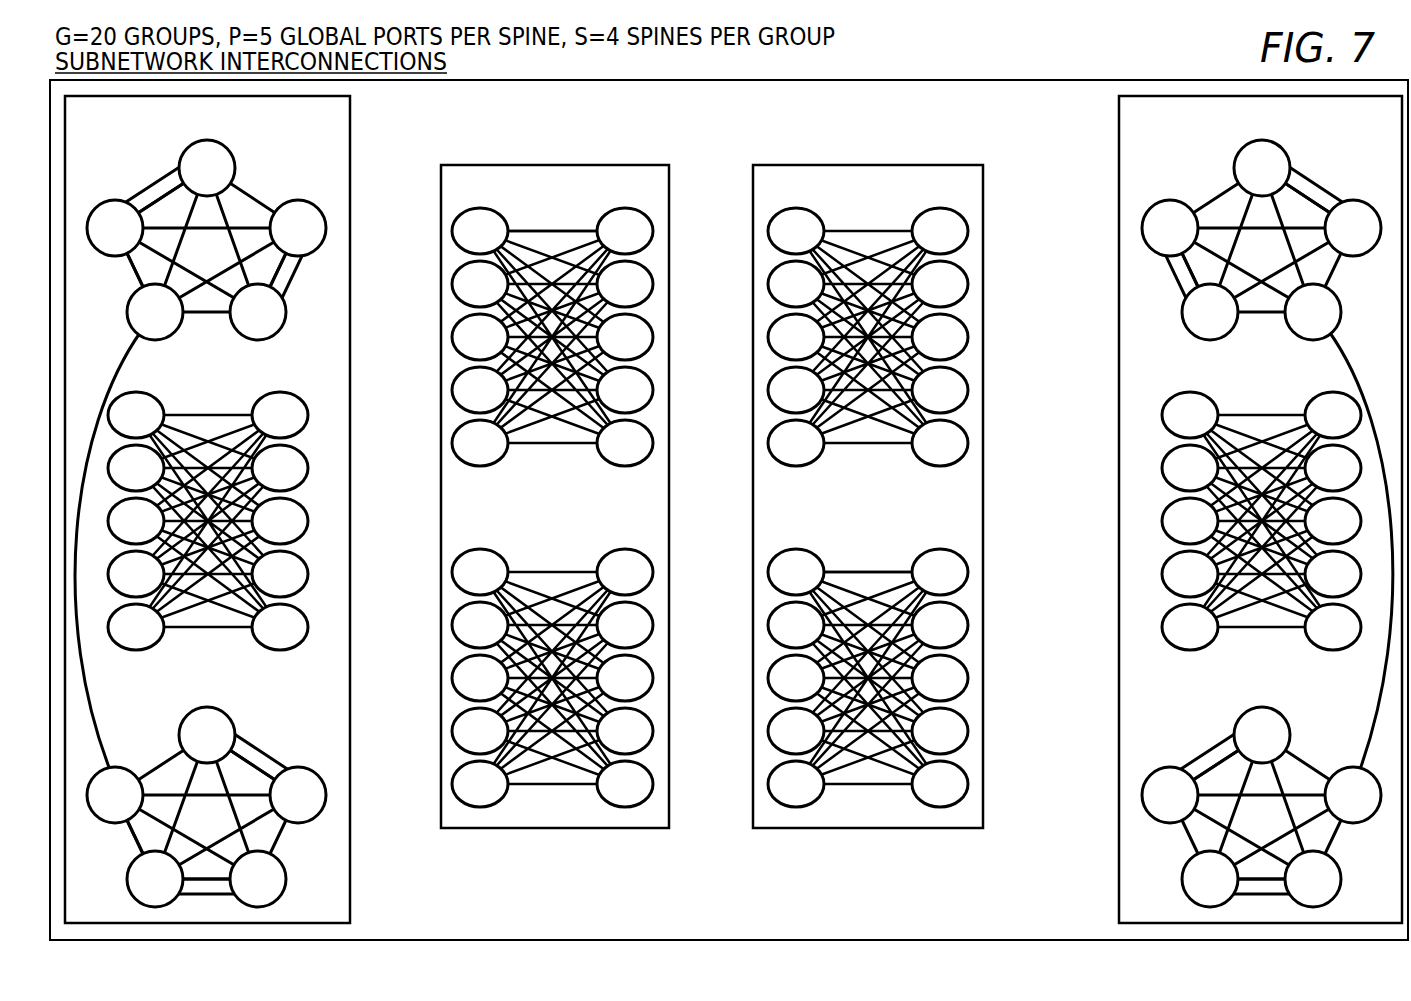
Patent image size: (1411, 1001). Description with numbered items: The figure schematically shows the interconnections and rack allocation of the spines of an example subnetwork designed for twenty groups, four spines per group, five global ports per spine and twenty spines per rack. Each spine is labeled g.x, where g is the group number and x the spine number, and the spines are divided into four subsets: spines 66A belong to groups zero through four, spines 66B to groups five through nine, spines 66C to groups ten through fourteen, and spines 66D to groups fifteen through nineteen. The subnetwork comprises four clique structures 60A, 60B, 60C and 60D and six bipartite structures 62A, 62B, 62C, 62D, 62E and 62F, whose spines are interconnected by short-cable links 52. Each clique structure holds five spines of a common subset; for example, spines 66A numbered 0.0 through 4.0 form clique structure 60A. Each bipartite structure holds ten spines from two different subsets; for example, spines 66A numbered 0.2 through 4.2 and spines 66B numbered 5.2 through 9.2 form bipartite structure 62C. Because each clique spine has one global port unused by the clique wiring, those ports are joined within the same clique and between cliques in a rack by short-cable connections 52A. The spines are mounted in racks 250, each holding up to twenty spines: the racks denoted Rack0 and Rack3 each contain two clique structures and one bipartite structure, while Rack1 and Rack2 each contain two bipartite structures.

The rack 250 is at (350, 342).
The short-cable link 52 is at (130, 273).
The short-cable connection among unused global ports 52A is at (152, 188).
The clique structure 60A is at (260, 156).
The clique structure 60B is at (332, 833).
The clique structure 60C is at (1148, 170).
The clique structure 60D is at (1148, 866).
The bipartite structure 62A is at (320, 610).
The bipartite structure 62B is at (566, 801).
The bipartite structure 62C is at (568, 461).
The bipartite structure 62D is at (886, 454).
The bipartite structure 62E is at (838, 556).
The bipartite structure 62F is at (1156, 676).
The spine 66A is at (326, 228).
The spine 66B is at (653, 231).
The spine 66C is at (653, 572).
The spine 66D is at (162, 394).